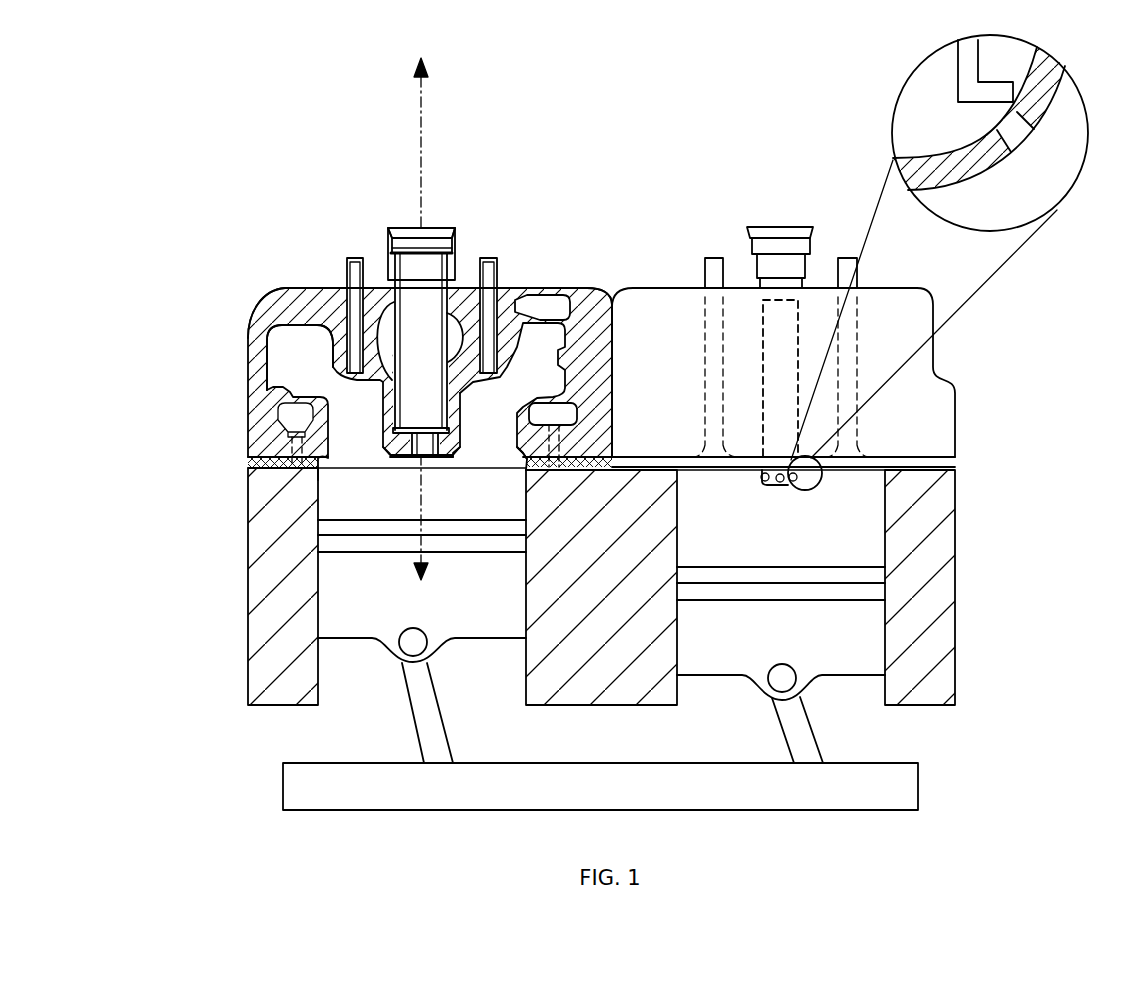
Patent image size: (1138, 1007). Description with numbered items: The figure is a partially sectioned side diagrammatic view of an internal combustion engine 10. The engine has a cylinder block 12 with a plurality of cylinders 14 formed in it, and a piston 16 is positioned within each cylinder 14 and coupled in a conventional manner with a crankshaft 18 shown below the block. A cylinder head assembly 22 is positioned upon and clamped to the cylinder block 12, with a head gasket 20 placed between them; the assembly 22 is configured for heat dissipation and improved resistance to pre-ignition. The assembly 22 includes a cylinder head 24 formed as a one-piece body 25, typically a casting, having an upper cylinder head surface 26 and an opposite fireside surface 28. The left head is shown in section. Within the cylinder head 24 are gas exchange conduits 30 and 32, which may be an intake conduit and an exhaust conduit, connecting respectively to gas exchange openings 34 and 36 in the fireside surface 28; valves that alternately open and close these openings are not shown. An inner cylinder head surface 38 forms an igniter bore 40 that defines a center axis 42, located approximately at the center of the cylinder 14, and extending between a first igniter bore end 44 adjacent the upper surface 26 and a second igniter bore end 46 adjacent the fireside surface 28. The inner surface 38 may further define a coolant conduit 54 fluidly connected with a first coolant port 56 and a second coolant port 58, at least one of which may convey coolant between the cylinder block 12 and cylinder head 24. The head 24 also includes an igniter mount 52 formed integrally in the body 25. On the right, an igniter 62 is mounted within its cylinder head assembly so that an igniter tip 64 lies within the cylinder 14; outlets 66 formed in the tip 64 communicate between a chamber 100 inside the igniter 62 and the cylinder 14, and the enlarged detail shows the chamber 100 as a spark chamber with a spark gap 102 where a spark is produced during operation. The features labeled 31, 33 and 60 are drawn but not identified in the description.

The internal combustion engine 10 is at (172, 175).
The cylinder block 12 is at (957, 492).
The cylinder 14 is at (348, 508).
The piston 16 is at (337, 628).
The crankshaft 18 is at (892, 762).
The head gasket 20 is at (250, 462).
The cylinder head assembly 22 is at (236, 386).
The cylinder head 24 is at (268, 312).
The one-piece body 25 is at (297, 288).
The upper cylinder head surface 26 is at (340, 288).
The fireside surface 28 is at (398, 458).
The gas exchange conduit 30 is at (262, 384).
The cylinder liner 31 is at (318, 480).
The gas exchange conduit 32 is at (572, 328).
The liner top 33 is at (528, 471).
The gas exchange opening 34 is at (323, 461).
The gas exchange opening 36 is at (521, 456).
The inner cylinder head surface 38 is at (390, 345).
The igniter bore 40 is at (397, 233).
The center axis 42 is at (424, 125).
The first igniter bore end 44 is at (428, 353).
The second igniter bore end 46 is at (430, 446).
The igniter mount 52 is at (428, 437).
The coolant conduit 54 is at (545, 297).
The first coolant port 56 is at (563, 443).
The second coolant port 58 is at (284, 435).
The bore clearance 60 is at (455, 343).
The igniter 62 is at (762, 397).
The igniter tip 64 is at (785, 487).
The outlet 66 is at (762, 476).
The chamber 100 is at (935, 110).
The spark gap 102 is at (1018, 70).